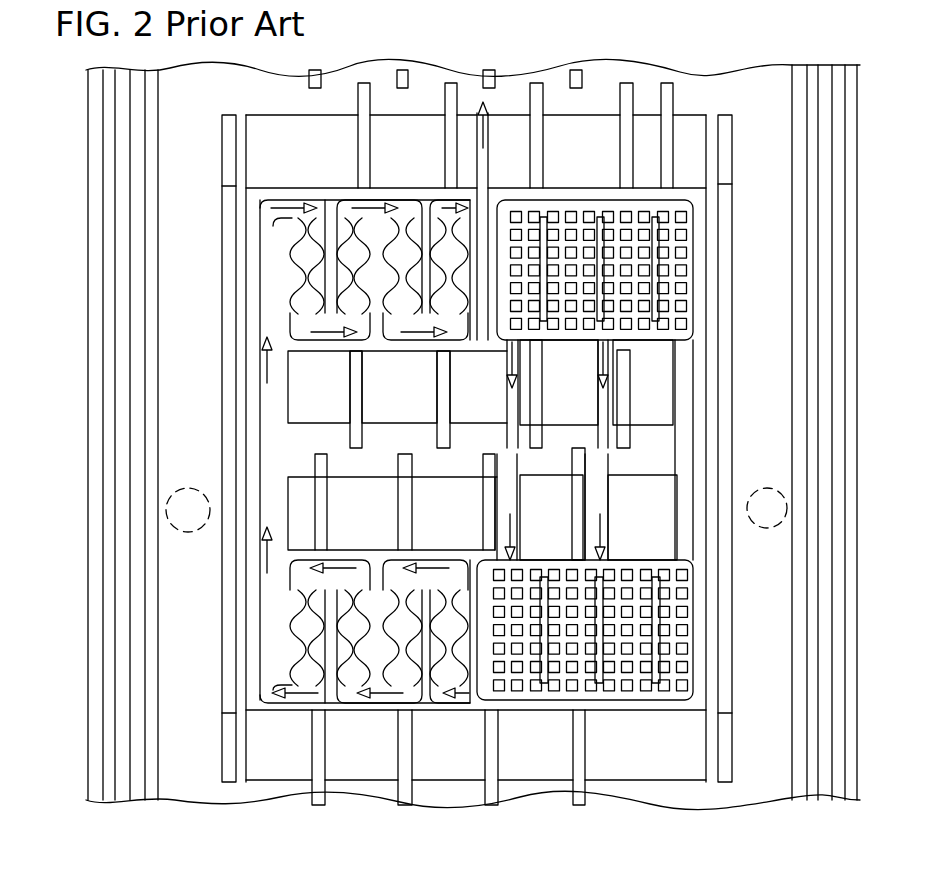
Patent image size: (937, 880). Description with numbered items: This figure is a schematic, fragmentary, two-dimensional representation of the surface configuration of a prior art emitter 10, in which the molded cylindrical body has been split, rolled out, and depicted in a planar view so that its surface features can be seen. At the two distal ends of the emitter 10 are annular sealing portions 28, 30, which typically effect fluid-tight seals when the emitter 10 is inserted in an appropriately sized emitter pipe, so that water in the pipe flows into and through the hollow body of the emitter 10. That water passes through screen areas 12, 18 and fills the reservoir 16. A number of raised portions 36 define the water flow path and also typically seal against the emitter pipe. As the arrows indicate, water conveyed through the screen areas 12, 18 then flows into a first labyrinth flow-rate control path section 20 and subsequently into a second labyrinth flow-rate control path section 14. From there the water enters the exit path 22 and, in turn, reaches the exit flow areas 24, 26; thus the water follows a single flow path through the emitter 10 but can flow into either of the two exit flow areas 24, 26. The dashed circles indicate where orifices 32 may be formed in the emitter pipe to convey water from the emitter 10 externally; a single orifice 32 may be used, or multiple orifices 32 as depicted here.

The emitter 10 is at (72, 110).
The screen area 12 is at (663, 267).
The second labyrinth flow-rate control path section 14 is at (300, 265).
The reservoir 16 is at (376, 522).
The screen area 18 is at (668, 630).
The first labyrinth flow-rate control path section 20 is at (300, 622).
The exit path 22 is at (524, 110).
The exit flow area 24 is at (771, 166).
The exit flow area 26 is at (204, 166).
The annular sealing portion 28 is at (125, 800).
The annular sealing portion 30 is at (828, 800).
The orifice 32 is at (172, 488).
The raised portion 36 is at (357, 124).